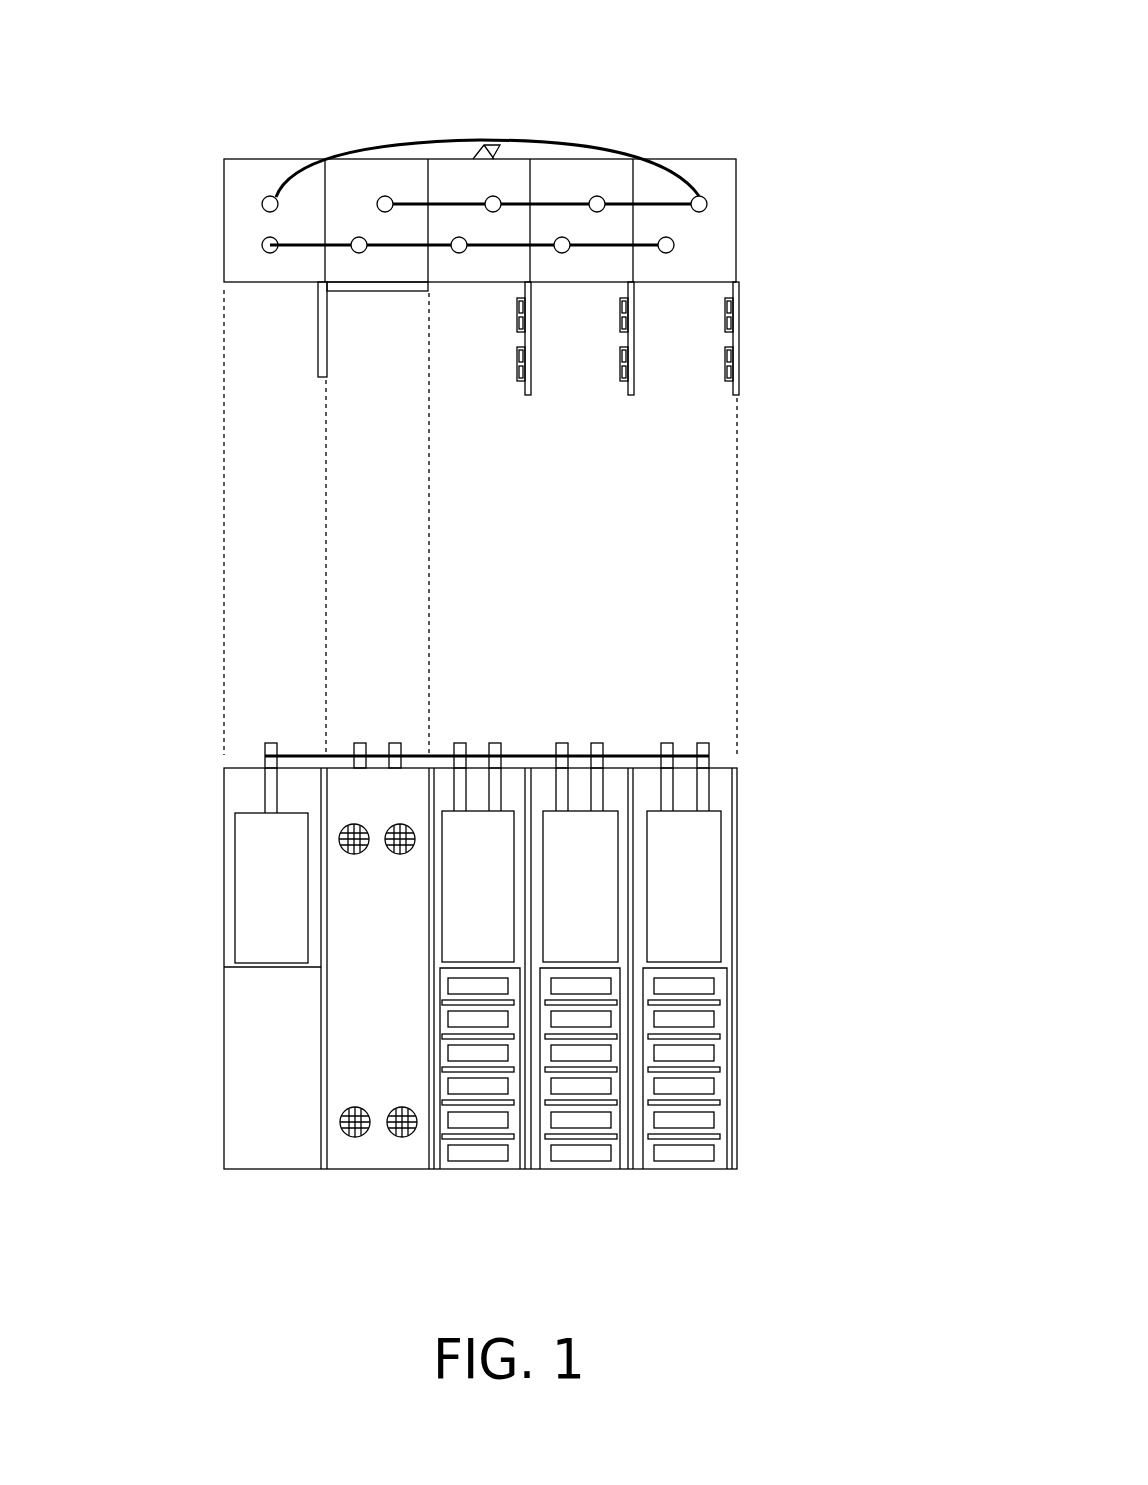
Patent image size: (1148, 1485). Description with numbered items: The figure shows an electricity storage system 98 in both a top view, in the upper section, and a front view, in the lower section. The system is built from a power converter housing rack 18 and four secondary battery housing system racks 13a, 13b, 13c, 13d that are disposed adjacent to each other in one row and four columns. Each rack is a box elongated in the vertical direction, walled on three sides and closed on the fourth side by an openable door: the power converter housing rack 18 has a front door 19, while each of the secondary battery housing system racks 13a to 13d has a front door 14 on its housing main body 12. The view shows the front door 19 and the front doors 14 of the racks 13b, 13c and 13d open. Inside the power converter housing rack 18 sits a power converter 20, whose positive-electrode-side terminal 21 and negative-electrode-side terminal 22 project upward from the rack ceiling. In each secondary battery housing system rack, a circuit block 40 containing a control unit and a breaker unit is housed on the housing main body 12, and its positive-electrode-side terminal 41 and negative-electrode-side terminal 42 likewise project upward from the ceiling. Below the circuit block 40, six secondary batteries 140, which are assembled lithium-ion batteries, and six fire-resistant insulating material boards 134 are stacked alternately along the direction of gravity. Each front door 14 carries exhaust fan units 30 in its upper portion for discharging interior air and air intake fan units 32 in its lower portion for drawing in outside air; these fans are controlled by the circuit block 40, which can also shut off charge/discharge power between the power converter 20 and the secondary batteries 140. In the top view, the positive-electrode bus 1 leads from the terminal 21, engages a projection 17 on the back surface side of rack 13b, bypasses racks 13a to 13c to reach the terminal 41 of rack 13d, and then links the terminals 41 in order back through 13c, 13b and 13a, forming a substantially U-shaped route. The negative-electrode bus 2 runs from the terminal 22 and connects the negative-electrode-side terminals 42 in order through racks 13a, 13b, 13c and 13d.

The electricity storage system 98 is at (814, 106).
The positive-electrode bus 1 is at (381, 142).
The negative-electrode bus 2 is at (297, 250).
The housing main body 12 is at (519, 1165).
The secondary battery housing system rack 13a is at (404, 170).
The secondary battery housing system rack 13b is at (505, 170).
The secondary battery housing system rack 13c is at (612, 168).
The secondary battery housing system rack 13d is at (715, 165).
The front door 14 is at (372, 292).
The projection 17 is at (487, 143).
The power converter housing rack 18 is at (238, 172).
The front door 19 is at (318, 357).
The power converter 20 is at (235, 922).
The positive-electrode-side terminal 21 is at (266, 211).
The negative-electrode-side terminal 22 is at (266, 252).
The exhaust fan unit 30 is at (513, 358).
The air intake fan unit 32 is at (355, 1106).
The circuit block 40 is at (721, 870).
The positive-electrode-side terminal 41 is at (378, 198).
The negative-electrode-side terminal 42 is at (366, 251).
The fire-resistant insulating material board 134 is at (450, 1140).
The secondary battery 140 is at (496, 1162).